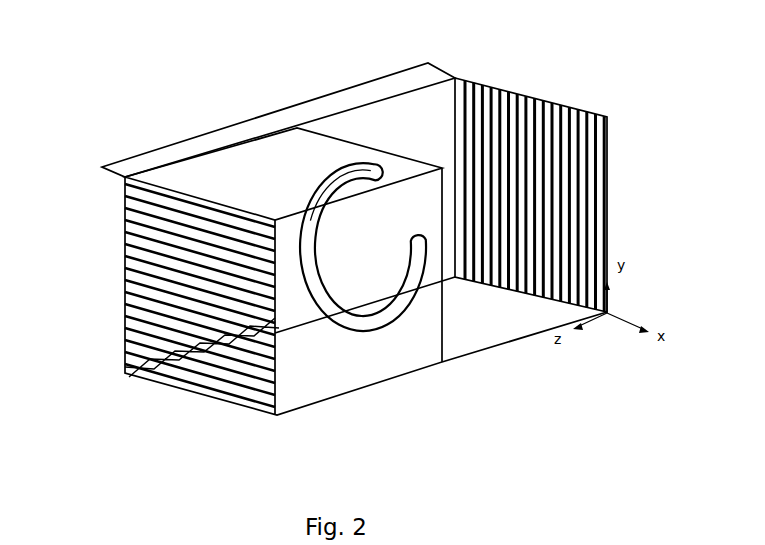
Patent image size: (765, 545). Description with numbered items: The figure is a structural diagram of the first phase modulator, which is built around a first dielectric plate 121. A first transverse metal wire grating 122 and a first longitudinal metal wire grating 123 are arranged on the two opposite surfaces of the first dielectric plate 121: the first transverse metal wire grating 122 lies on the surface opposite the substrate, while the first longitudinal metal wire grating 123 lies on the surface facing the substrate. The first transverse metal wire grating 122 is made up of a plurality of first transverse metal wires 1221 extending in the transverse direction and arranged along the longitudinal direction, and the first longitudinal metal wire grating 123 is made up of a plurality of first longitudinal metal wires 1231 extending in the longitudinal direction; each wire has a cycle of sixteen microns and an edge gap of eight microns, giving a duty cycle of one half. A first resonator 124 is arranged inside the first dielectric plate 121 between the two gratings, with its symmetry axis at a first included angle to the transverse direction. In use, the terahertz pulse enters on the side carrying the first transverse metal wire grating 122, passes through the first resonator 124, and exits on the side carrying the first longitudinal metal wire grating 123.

The first dielectric plate 121 is at (200, 155).
The first transverse metal wire grating 122 is at (178, 384).
The first transverse metal wire 1221 is at (143, 223).
The first longitudinal metal wire grating 123 is at (474, 83).
The first longitudinal metal wire 1231 is at (535, 93).
The first resonator 124 is at (340, 160).